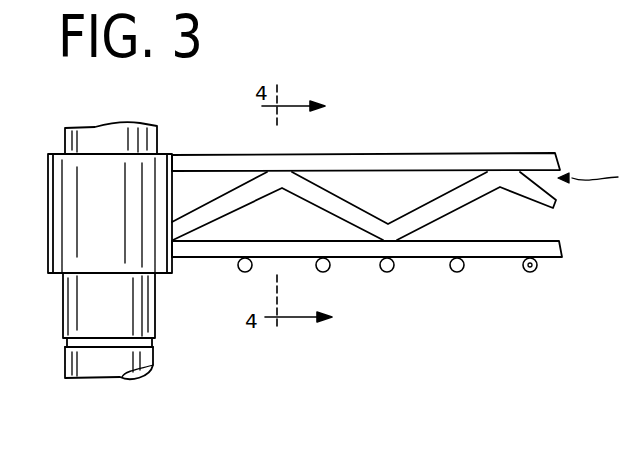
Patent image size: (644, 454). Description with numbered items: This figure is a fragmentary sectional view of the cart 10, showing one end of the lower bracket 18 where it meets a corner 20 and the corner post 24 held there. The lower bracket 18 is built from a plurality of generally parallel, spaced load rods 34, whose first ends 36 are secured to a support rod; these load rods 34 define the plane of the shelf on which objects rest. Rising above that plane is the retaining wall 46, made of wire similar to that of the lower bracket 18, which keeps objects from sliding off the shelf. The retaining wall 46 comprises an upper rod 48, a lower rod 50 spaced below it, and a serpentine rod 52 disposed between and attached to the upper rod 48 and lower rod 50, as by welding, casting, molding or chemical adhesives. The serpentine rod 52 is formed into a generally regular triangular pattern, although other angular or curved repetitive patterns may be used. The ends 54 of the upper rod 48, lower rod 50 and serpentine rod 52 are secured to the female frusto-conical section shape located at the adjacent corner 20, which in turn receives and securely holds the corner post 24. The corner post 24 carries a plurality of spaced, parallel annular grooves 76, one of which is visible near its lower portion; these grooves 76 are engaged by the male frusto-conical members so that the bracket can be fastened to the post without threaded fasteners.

The cart 10 is at (419, 114).
The lower bracket 18 is at (445, 137).
The corner 20 is at (68, 197).
The corner post 24 is at (88, 300).
The load rods 34 is at (458, 289).
The first ends 36 is at (540, 270).
The retaining wall 46 is at (601, 178).
The upper rod 48 is at (538, 158).
The lower rod 50 is at (560, 245).
The serpentine rod 52 is at (335, 198).
The ends of the rods 54 is at (176, 163).
The annular grooves 76 is at (98, 343).